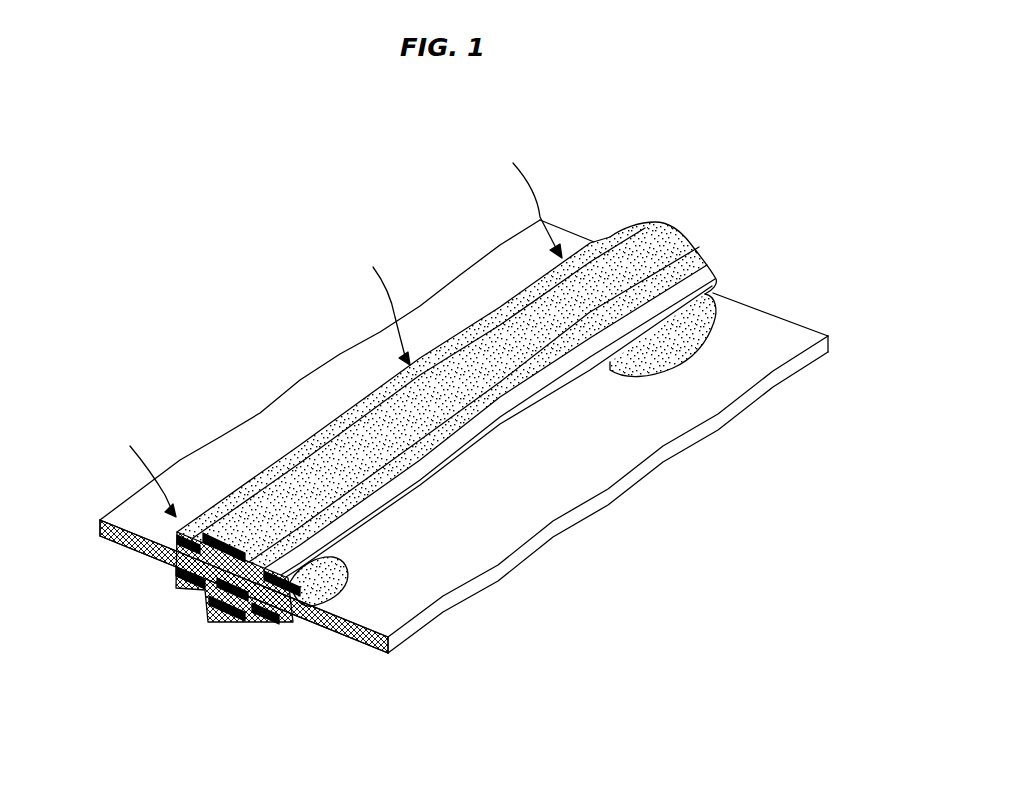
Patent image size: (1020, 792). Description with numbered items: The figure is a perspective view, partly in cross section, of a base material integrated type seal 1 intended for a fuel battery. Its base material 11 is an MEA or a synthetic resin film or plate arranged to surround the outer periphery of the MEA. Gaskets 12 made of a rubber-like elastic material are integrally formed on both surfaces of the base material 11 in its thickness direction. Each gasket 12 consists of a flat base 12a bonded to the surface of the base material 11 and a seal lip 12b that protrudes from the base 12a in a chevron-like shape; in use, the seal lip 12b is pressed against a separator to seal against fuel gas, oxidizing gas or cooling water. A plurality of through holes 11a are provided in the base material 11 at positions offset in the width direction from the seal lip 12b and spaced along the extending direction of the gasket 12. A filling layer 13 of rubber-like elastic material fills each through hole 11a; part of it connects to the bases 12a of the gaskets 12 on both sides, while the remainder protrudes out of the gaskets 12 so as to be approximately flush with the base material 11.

The base material integrated type seal 1 is at (596, 202).
The base material 11 is at (563, 478).
The through hole 11a is at (722, 294).
The gasket 12 is at (421, 466).
The base 12a is at (413, 478).
The seal lip 12b is at (287, 467).
The filling layer 13 is at (703, 340).